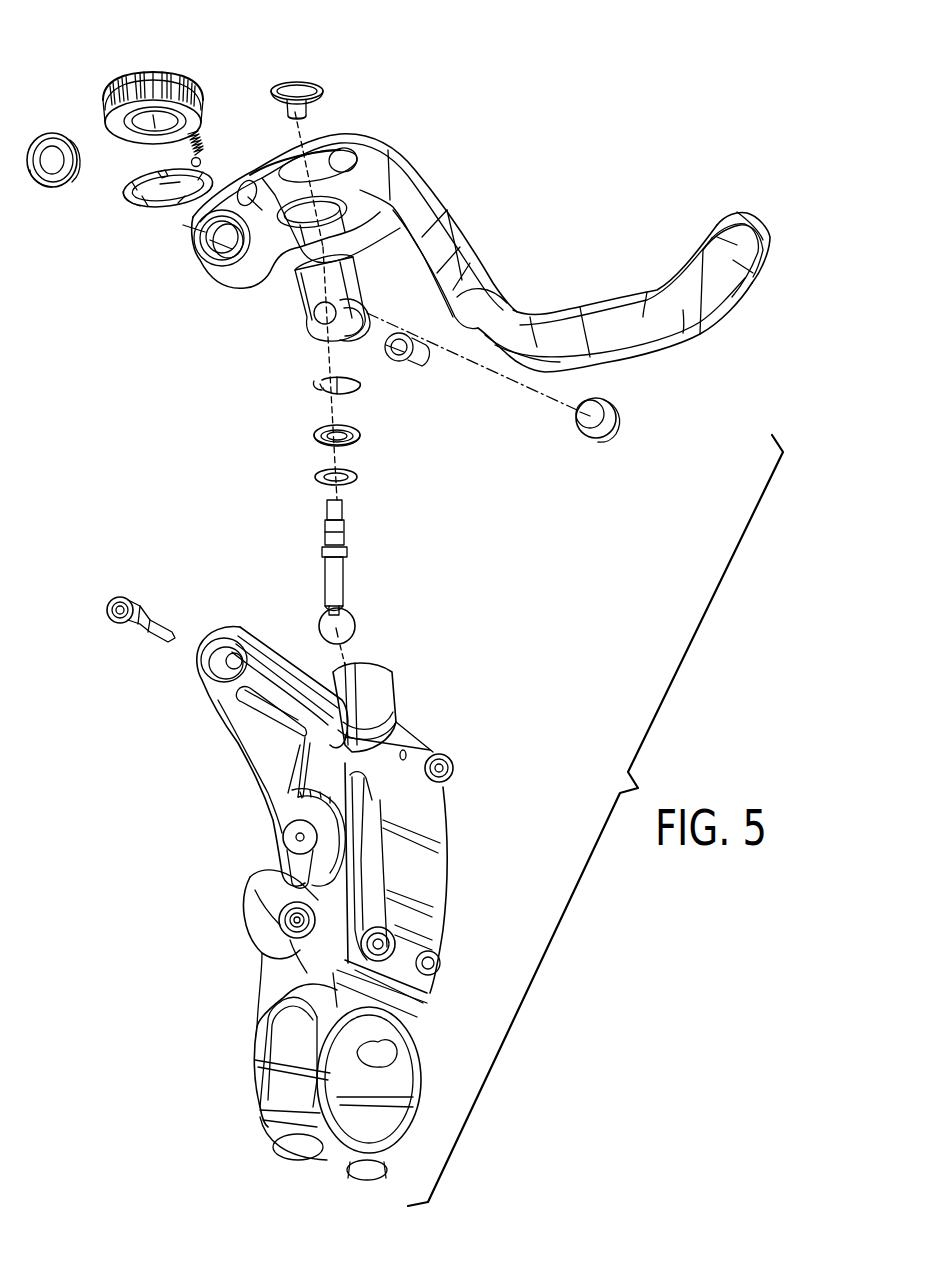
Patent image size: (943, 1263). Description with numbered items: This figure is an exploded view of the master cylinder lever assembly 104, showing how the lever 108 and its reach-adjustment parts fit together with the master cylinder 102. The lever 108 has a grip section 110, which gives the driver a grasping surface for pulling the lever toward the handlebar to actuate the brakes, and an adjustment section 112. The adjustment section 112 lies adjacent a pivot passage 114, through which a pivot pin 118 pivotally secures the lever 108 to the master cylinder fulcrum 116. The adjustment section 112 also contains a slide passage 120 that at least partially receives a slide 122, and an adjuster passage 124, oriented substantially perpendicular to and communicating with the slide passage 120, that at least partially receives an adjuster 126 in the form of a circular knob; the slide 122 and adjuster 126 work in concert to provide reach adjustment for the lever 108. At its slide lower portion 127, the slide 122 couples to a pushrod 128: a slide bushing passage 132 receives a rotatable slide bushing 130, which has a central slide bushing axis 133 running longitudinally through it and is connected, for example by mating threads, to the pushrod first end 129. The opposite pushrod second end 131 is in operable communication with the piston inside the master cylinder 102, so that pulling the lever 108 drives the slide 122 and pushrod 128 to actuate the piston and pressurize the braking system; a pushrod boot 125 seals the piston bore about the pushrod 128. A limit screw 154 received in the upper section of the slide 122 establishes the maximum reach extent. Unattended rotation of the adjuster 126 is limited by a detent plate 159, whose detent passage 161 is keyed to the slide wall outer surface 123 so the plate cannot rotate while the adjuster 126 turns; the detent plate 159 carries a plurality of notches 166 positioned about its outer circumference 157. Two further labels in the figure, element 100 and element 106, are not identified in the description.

The brake lever assembly 100 is at (497, 153).
The master cylinder 102 is at (230, 940).
The master cylinder lever assembly 104 is at (120, 460).
The handlebar clamp 106 is at (262, 1041).
The lever 108 is at (542, 296).
The grip section 110 is at (672, 272).
The adjustment section 112 is at (382, 136).
The pivot passage 114 is at (216, 243).
The master cylinder fulcrum 116 is at (218, 655).
The pivot pin 118 is at (110, 603).
The slide passage 120 is at (325, 216).
The slide 122 is at (296, 295).
The slide wall outer surface 123 is at (330, 279).
The adjuster passage 124 is at (248, 190).
The pushrod boot 125 is at (377, 688).
The adjuster 126 is at (150, 77).
The slide lower portion 127 is at (345, 335).
The pushrod 128 is at (347, 582).
The pushrod first end 129 is at (327, 512).
The slide bushing 130 is at (423, 366).
The pushrod second end 131 is at (348, 627).
The slide bushing passage 132 is at (317, 318).
The central slide bushing axis 133 is at (386, 330).
The limit screw 154 is at (295, 82).
The outer circumference 157 is at (205, 183).
The detent plate 159 is at (120, 203).
The detent passage 161 is at (160, 190).
The notches 166 is at (163, 172).